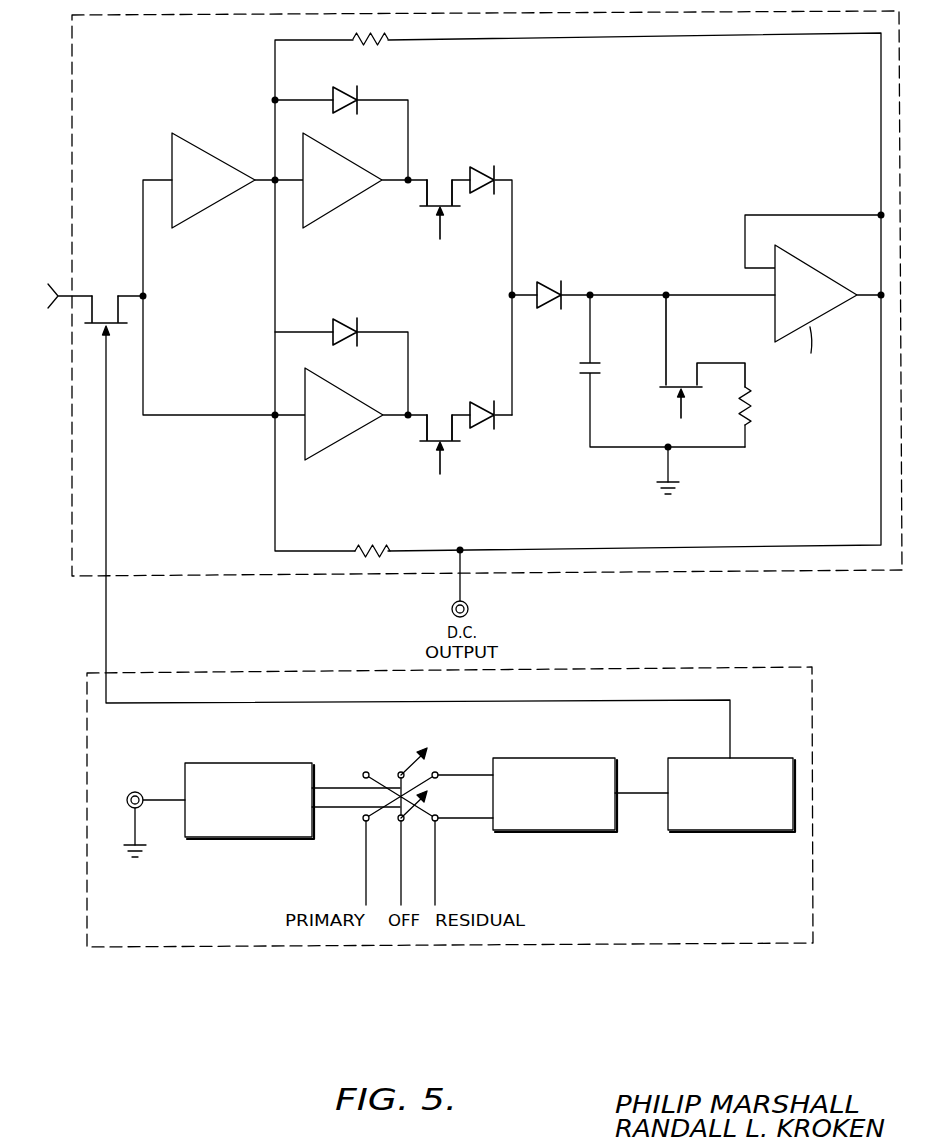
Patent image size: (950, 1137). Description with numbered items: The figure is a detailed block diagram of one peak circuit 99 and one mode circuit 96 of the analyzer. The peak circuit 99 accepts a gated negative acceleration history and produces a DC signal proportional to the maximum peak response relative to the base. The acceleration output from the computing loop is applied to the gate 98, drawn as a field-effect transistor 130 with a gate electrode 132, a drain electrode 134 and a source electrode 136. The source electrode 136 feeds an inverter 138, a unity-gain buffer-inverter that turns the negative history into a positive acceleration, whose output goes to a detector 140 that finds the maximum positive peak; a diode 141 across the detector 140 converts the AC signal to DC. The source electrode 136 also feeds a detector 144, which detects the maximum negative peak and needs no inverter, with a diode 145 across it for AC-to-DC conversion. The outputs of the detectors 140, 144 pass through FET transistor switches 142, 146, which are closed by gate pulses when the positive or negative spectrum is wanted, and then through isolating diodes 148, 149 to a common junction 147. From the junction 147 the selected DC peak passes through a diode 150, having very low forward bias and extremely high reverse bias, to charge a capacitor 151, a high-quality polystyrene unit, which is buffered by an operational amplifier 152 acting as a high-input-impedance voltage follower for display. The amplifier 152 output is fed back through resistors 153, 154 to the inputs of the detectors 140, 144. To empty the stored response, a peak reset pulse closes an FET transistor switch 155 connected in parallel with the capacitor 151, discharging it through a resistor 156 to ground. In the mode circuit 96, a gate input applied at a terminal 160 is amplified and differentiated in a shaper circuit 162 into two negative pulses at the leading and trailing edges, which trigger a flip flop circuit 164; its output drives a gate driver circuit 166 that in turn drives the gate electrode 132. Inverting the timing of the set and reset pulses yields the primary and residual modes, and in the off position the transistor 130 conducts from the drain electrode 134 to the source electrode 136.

The mode circuit 96 is at (700, 943).
The gate 98 is at (108, 284).
The peak circuit 99 is at (745, 573).
The field-effect transistor 130 is at (95, 327).
The gate electrode 132 is at (106, 380).
The drain electrode 134 is at (88, 292).
The source electrode 136 is at (143, 290).
The inverter 138 is at (210, 150).
The detector 140 is at (343, 150).
The diode 141 is at (343, 88).
The FET transistor switch 142 is at (423, 210).
The detector 144 is at (357, 368).
The diode 145 is at (343, 320).
The FET transistor switch 146 is at (458, 445).
The junction 147 is at (510, 294).
The diode 148 is at (482, 165).
The diode 149 is at (490, 402).
The diode 150 is at (540, 282).
The capacitor 151 is at (581, 363).
The operational amplifier 152 is at (815, 262).
The resistor 153 is at (370, 40).
The resistor 154 is at (370, 550).
The FET transistor switch 155 is at (668, 393).
The resistor 156 is at (752, 410).
The terminal 160 is at (140, 807).
The shaper circuit 162 is at (270, 740).
The flip flop circuit 164 is at (558, 758).
The gate driver circuit 166 is at (740, 758).